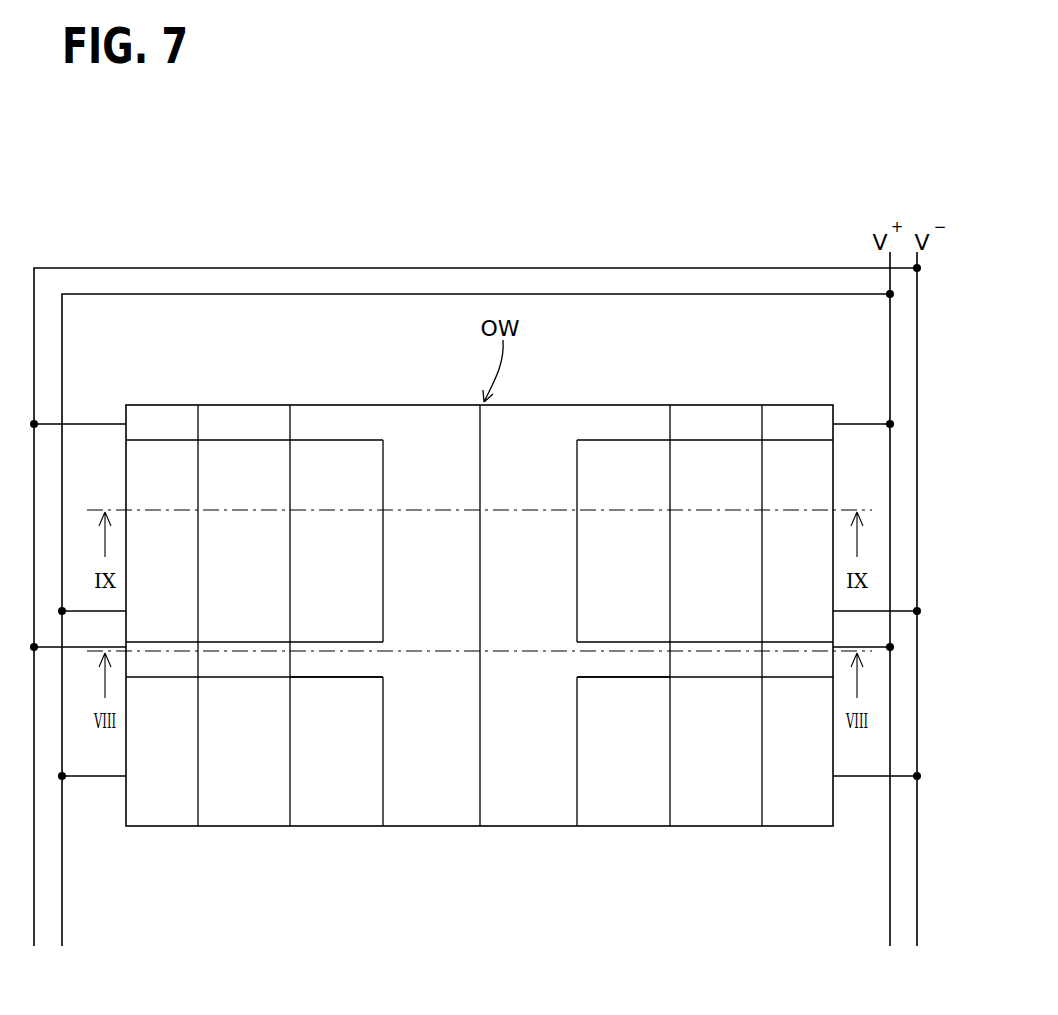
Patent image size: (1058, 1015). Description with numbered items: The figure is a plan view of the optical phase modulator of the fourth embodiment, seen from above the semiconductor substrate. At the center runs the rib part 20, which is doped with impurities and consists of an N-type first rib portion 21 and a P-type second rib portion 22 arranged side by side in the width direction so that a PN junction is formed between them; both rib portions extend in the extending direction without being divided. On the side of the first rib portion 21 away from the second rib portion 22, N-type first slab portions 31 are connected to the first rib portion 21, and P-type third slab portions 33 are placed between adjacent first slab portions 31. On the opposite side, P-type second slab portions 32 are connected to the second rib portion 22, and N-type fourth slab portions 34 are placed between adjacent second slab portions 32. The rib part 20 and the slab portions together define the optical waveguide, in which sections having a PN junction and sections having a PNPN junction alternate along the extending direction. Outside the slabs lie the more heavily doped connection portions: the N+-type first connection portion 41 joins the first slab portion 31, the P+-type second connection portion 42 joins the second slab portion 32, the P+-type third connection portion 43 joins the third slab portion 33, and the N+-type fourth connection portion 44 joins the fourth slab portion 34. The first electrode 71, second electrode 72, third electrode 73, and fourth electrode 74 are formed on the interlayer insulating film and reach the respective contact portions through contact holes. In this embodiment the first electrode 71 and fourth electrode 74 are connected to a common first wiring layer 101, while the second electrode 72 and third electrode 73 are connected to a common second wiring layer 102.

The rib part 20 is at (479, 668).
The first rib portion 21 is at (546, 666).
The second rib portion 22 is at (434, 805).
The first slab portion 31 is at (652, 660).
The second slab portion 32 is at (362, 665).
The third slab portion 33 is at (605, 805).
The fourth slab portion 34 is at (328, 805).
The first connection portion 41 is at (746, 668).
The second connection portion 42 is at (280, 663).
The third connection portion 43 is at (700, 805).
The fourth connection portion 44 is at (231, 805).
The first electrode 71 is at (822, 668).
The second electrode 72 is at (135, 668).
The third electrode 73 is at (787, 808).
The fourth electrode 74 is at (173, 808).
The first wiring layer 101 is at (635, 294).
The second wiring layer 102 is at (740, 268).